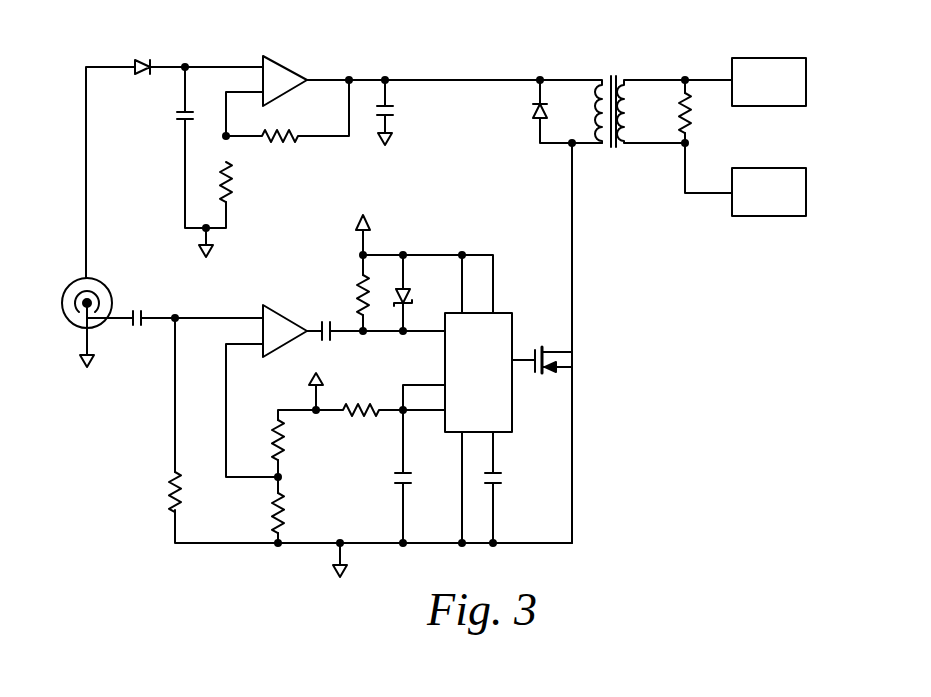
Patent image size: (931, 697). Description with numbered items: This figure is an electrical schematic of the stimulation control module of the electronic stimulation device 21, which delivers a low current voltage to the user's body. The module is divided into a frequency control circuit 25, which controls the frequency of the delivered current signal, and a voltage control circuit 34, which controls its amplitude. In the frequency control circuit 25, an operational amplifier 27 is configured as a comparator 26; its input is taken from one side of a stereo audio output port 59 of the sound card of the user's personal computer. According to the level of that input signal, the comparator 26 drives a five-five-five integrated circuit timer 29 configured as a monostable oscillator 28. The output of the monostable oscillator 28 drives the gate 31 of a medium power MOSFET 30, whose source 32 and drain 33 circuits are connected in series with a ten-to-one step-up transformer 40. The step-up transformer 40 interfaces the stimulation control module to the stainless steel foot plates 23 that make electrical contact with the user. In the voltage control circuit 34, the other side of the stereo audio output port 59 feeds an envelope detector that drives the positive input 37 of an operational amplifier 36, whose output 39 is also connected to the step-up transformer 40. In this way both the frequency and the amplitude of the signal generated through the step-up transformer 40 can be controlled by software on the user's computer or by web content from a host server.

The electronic stimulation device 21 is at (678, 340).
The stainless steel foot plates 23 is at (769, 137).
The frequency control circuit 25 is at (100, 462).
The comparator 26 is at (287, 317).
The operational amplifier 27 is at (283, 358).
The monostable oscillator 28 is at (512, 297).
The 555 integrated circuit timer 29 is at (478, 372).
The medium power MOSFET 30 is at (586, 352).
The gate 31 is at (537, 373).
The source 32 is at (575, 368).
The drain 33 is at (580, 352).
The voltage control circuit 34 is at (372, 57).
The operational amplifier 36 is at (278, 72).
The positive input 37 is at (263, 62).
The output 39 is at (305, 82).
The step-up transformer 40 is at (612, 75).
The stereo audio output port 59 is at (72, 285).